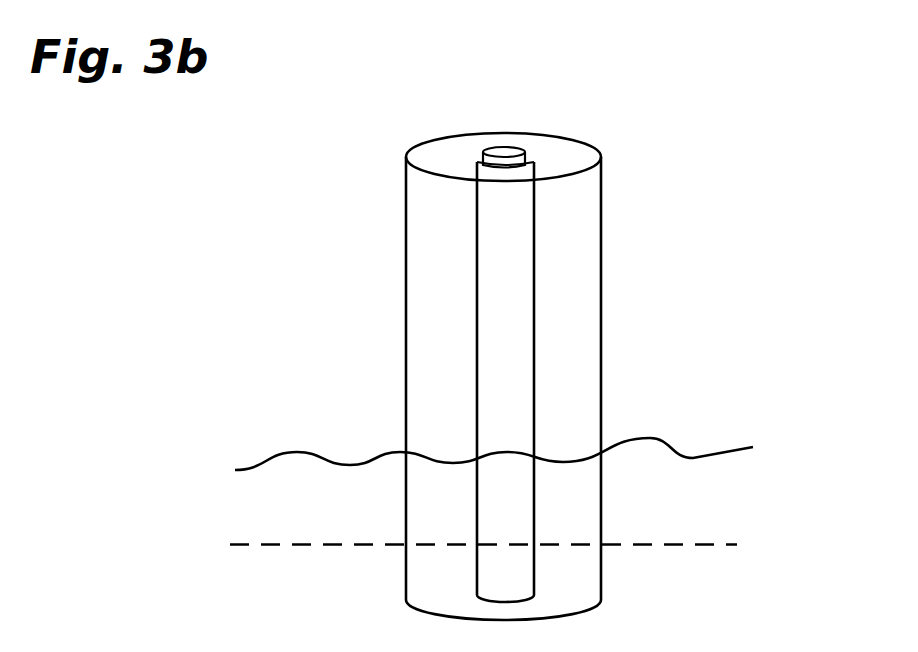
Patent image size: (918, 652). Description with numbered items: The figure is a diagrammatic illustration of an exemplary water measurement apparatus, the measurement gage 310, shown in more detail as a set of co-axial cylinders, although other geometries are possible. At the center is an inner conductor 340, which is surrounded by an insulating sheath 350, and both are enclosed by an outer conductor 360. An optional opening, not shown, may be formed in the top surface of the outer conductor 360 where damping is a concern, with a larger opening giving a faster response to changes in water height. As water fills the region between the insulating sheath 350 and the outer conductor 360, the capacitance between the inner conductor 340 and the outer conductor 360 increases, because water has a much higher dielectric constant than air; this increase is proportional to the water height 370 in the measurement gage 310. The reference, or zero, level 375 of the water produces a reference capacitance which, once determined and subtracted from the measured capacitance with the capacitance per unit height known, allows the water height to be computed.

The measurement gage 310 is at (329, 232).
The inner conductor 340 is at (503, 145).
The insulating sheath 350 is at (535, 227).
The outer conductor 360 is at (601, 270).
The water height 370 is at (698, 457).
The reference level 375 is at (695, 542).